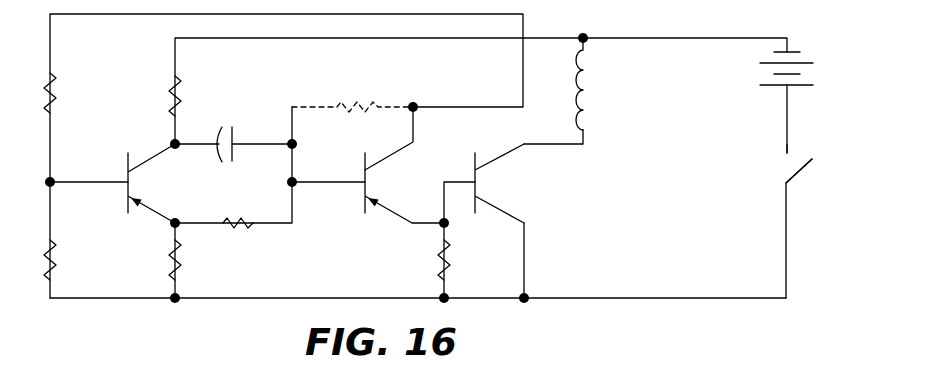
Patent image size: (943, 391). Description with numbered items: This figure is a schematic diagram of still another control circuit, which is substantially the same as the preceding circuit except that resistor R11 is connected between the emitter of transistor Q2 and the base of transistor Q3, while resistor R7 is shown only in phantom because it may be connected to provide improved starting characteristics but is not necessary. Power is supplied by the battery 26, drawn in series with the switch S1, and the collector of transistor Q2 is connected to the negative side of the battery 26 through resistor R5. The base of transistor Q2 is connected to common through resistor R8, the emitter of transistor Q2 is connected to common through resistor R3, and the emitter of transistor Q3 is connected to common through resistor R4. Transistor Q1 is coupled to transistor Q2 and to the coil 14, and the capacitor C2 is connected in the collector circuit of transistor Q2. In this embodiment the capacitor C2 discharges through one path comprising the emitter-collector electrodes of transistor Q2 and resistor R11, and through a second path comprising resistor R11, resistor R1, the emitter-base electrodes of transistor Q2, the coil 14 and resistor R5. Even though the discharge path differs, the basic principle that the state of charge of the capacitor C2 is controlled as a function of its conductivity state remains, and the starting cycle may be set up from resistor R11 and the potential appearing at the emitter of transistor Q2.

The resistor R1 is at (56, 98).
The resistor R5 is at (181, 78).
The resistor R7 is at (352, 94).
The resistor R8 is at (56, 252).
The resistor R3 is at (181, 272).
The resistor R11 is at (246, 232).
The resistor R4 is at (450, 258).
The capacitor C2 is at (222, 170).
The transistor Q2 is at (134, 180).
The transistor Q3 is at (371, 180).
The transistor Q1 is at (481, 182).
The coil 14 is at (588, 100).
The battery 26 is at (814, 77).
The switch S1 is at (802, 170).